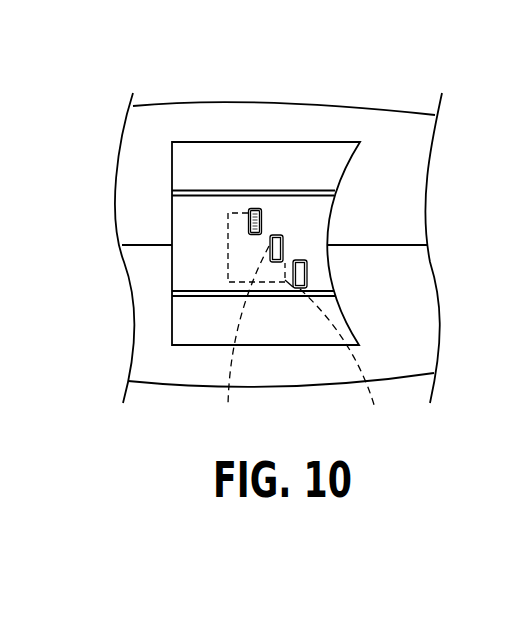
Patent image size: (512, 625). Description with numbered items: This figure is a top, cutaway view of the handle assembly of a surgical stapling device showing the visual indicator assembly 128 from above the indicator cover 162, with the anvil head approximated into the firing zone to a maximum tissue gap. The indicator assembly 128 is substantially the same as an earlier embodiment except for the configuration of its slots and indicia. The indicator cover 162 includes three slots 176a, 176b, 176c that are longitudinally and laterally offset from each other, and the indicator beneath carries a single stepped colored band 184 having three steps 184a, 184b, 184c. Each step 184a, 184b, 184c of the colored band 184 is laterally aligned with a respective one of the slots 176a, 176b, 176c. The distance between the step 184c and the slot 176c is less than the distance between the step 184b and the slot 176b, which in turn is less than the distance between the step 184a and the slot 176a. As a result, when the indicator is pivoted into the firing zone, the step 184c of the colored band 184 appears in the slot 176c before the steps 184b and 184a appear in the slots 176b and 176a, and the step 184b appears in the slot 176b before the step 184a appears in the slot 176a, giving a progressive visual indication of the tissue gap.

The visual indicator assembly 128 is at (226, 99).
The indicator cover 162 is at (333, 180).
The slot 176a is at (299, 260).
The slot 176b is at (276, 235).
The slot 176c is at (257, 208).
The stepped colored band 184 is at (219, 262).
The step 184a is at (351, 361).
The step 184b is at (241, 338).
The step 184c is at (248, 223).